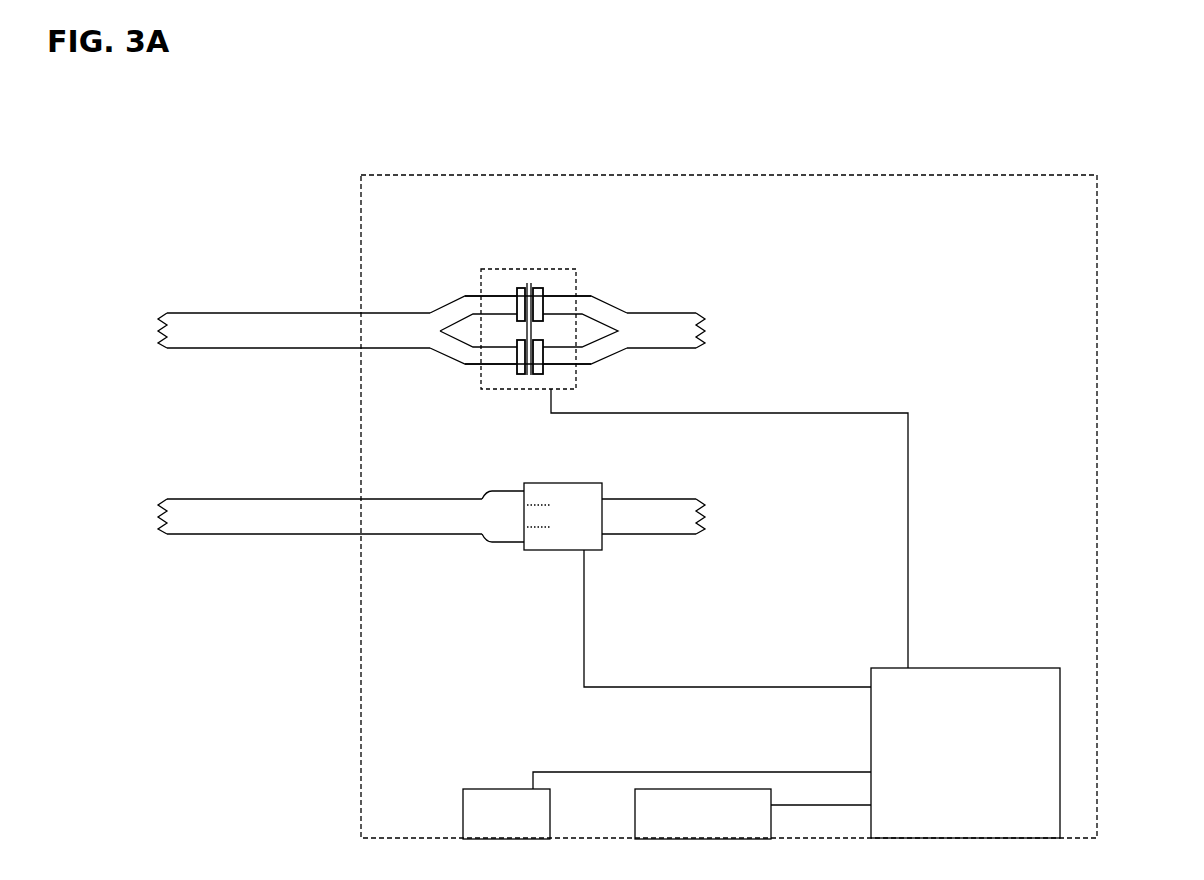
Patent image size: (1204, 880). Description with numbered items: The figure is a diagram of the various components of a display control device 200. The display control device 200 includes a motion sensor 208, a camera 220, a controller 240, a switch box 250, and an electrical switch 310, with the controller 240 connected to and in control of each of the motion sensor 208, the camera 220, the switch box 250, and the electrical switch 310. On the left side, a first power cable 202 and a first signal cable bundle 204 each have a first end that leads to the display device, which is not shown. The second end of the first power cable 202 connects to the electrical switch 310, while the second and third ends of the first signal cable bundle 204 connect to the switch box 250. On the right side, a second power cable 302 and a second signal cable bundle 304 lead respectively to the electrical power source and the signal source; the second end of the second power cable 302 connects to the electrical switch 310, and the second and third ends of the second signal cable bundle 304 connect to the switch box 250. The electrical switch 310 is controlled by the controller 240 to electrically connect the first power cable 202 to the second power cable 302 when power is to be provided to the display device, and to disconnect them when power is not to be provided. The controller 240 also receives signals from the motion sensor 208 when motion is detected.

The display control device 200 is at (1097, 423).
The first power cable 202 is at (227, 534).
The first signal cable bundle 204 is at (294, 313).
The motion sensor 208 is at (482, 789).
The camera 220 is at (650, 789).
The controller 240 is at (942, 668).
The switch box 250 is at (513, 269).
The second power cable 302 is at (618, 499).
The second signal cable bundle 304 is at (666, 313).
The electrical switch 310 is at (550, 550).